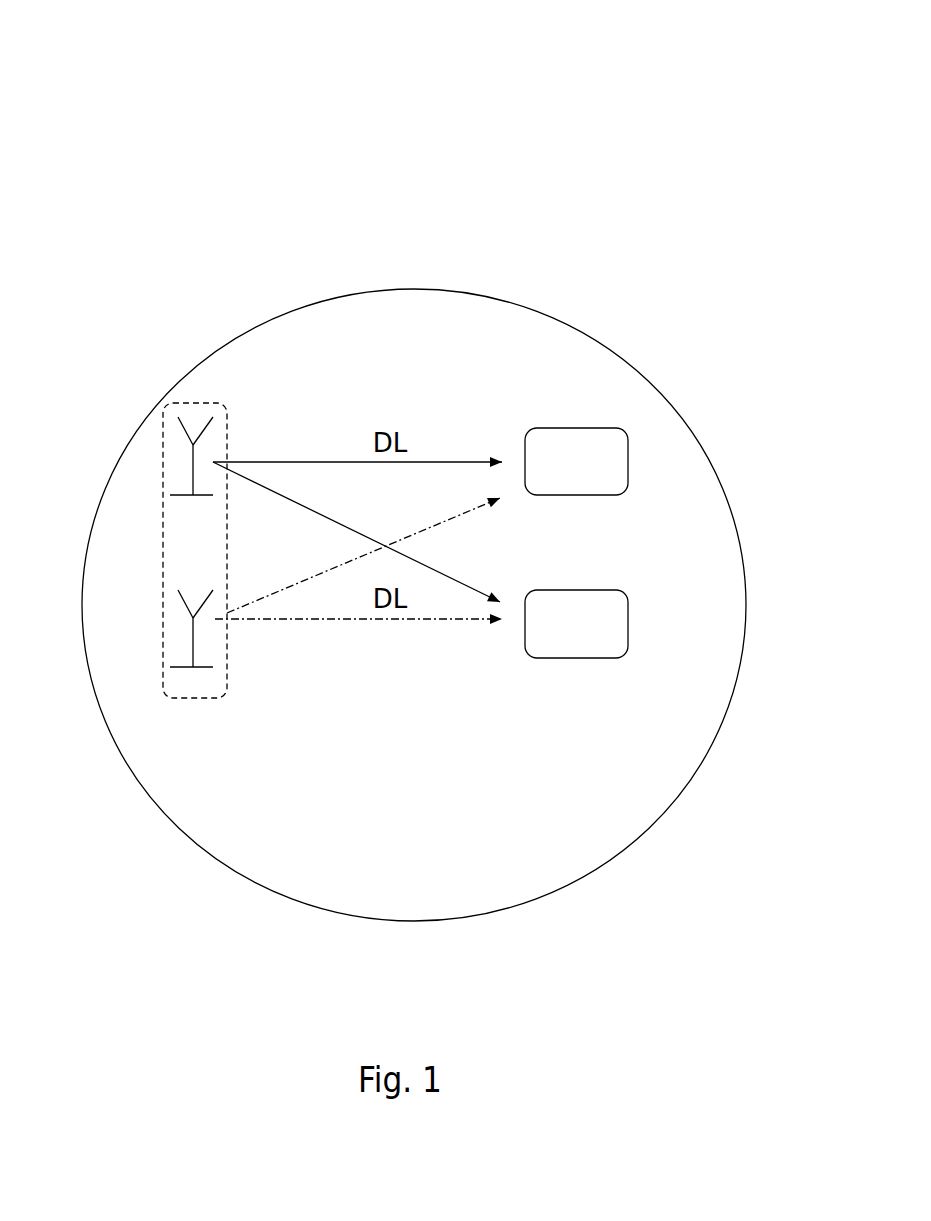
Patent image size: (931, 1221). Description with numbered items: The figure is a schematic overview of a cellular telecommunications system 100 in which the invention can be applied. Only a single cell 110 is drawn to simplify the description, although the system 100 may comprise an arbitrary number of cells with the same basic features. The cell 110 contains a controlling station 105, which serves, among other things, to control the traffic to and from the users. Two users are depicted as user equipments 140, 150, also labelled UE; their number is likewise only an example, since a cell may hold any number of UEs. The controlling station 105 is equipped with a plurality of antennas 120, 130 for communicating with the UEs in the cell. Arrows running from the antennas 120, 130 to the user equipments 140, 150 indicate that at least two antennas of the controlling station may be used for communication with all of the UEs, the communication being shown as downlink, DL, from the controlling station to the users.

The cellular telecommunications system 100 is at (178, 120).
The controlling station 105 is at (180, 718).
The cell 110 is at (595, 317).
The antenna 120 is at (178, 445).
The antenna 130 is at (175, 635).
The user equipment 140 is at (640, 460).
The user equipment 150 is at (640, 620).